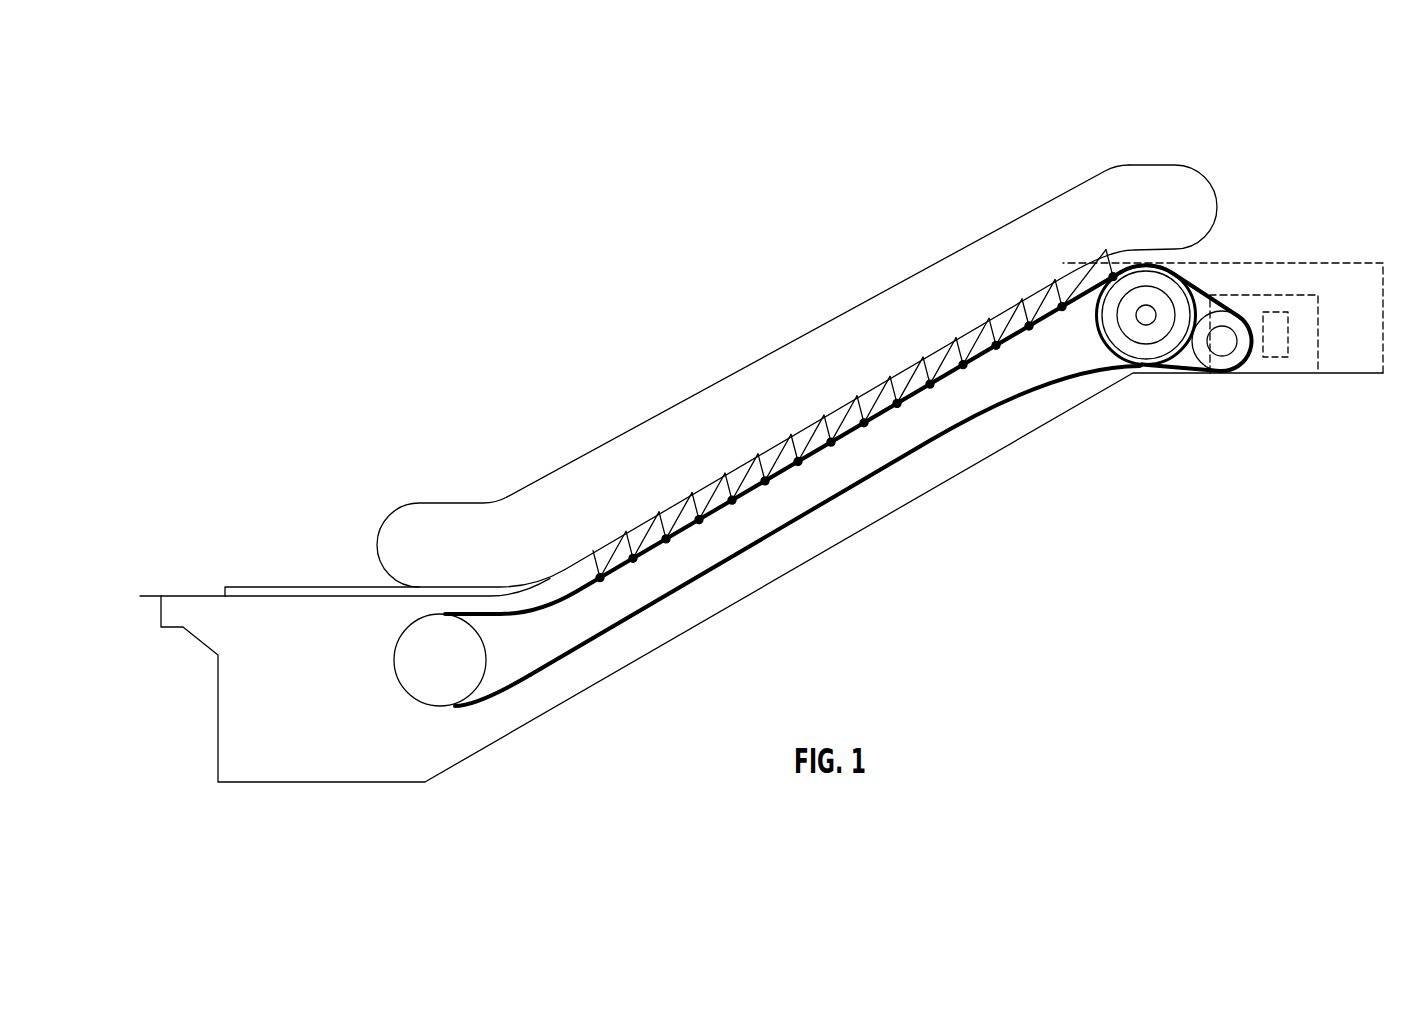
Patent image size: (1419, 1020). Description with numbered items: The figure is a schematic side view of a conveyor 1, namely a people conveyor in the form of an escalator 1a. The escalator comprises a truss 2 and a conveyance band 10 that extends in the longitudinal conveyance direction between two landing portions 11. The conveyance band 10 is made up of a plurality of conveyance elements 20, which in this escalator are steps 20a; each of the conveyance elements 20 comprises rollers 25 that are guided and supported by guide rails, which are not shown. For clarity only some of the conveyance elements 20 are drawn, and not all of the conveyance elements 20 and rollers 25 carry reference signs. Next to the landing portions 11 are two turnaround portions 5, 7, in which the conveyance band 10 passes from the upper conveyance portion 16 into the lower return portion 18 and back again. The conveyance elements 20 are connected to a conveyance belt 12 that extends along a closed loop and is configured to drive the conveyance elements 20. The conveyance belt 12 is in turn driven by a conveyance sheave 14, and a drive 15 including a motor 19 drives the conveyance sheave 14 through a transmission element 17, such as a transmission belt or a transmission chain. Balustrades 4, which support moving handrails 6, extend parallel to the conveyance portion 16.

The conveyor 1 is at (769, 462).
The escalator 1a is at (769, 462).
The truss 2 is at (273, 790).
The balustrades 4 is at (455, 532).
The turnaround portion 5 is at (378, 702).
The moving handrails 6 is at (633, 430).
The turnaround portion 7 is at (1214, 258).
The conveyance band 10 is at (708, 553).
The landing portions 11 is at (812, 345).
The conveyance belt 12 is at (478, 706).
The conveyance sheave 14 is at (1074, 325).
The drive 15 is at (1338, 322).
The conveyance portion 16 is at (890, 350).
The transmission element 17 is at (1243, 276).
The return portion 18 is at (627, 653).
The motor 19 is at (1272, 345).
The conveyance elements 20 is at (829, 414).
The steps 20a is at (600, 548).
The rollers 25 is at (630, 568).